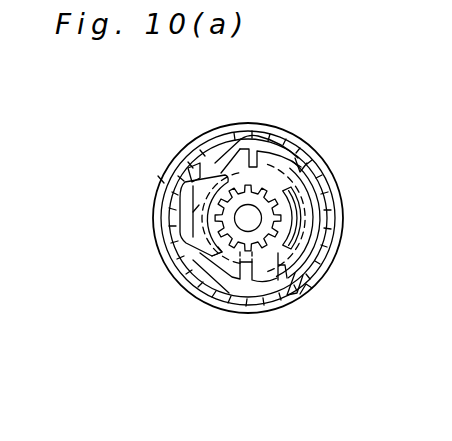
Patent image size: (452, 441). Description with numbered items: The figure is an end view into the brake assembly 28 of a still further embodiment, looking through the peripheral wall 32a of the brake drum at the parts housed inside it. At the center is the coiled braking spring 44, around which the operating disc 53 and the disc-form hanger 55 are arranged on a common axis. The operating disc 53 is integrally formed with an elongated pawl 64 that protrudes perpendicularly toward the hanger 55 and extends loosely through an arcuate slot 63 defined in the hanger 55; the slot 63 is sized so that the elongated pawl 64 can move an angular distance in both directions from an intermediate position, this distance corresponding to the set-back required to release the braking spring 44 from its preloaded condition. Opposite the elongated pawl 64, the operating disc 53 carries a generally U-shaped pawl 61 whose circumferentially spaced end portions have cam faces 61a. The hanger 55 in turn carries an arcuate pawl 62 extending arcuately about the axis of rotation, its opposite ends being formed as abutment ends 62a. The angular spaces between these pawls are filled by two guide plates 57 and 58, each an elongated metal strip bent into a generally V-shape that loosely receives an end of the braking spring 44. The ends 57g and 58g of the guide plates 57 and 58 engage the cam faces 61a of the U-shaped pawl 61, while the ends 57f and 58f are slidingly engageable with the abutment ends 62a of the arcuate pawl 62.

The brake assembly 28 is at (299, 124).
The peripheral wall 32a is at (161, 180).
The coiled braking spring 44 is at (259, 292).
The operating disc 53 is at (193, 212).
The hanger 55 is at (281, 290).
The guide plate 57 is at (272, 137).
The end of guide plate 57f is at (305, 168).
The end of guide plate 57g is at (203, 160).
The guide plate 58 is at (228, 293).
The end of guide plate 58f is at (297, 291).
The end of guide plate 58g is at (198, 259).
The generally U-shaped pawl 61 is at (177, 218).
The cam faces 61a is at (193, 165).
The arcuate pawl 62 is at (340, 252).
The abutment ends 62a is at (303, 162).
The arcuate slot 63 is at (294, 192).
The elongated pawl 64 is at (298, 216).